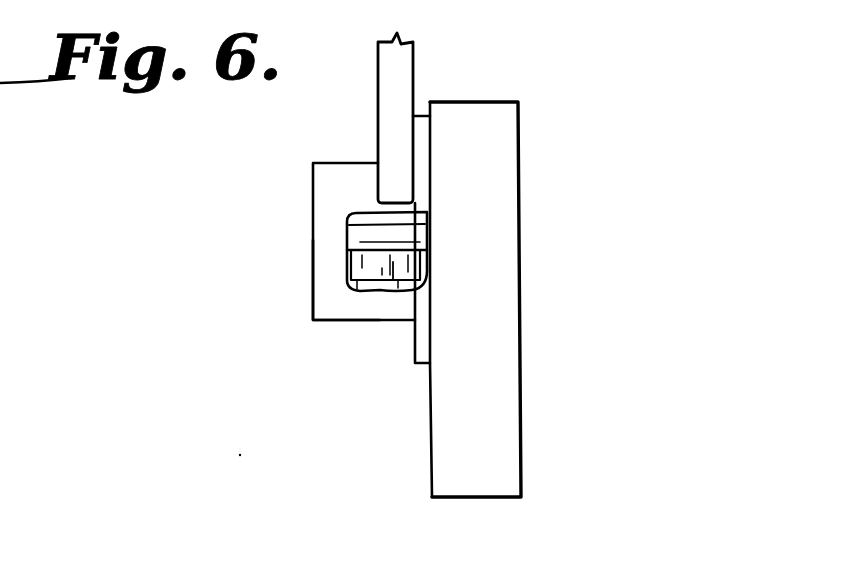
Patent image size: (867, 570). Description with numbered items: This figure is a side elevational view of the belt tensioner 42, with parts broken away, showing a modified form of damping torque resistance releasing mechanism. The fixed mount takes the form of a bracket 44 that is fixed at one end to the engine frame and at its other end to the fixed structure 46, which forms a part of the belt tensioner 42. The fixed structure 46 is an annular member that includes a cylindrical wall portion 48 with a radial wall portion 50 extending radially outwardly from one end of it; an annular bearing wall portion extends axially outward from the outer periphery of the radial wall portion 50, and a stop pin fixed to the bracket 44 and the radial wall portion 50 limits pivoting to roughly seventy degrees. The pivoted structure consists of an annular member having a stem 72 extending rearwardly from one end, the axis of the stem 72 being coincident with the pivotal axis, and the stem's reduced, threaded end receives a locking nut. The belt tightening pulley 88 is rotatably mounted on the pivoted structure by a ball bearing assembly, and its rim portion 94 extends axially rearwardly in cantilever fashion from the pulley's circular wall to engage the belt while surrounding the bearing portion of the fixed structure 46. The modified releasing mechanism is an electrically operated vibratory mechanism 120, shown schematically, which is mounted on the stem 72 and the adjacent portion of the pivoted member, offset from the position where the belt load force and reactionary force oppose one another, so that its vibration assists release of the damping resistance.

The belt tensioner 42 is at (494, 91).
The bracket 44 is at (388, 87).
The fixed structure 46 is at (312, 185).
The cylindrical wall portion 48 is at (330, 265).
The radial wall portion 50 is at (422, 162).
The stem 72 is at (363, 230).
The belt tightening pulley 88 is at (522, 155).
The rim portion 94 is at (503, 257).
The vibratory mechanism 120 is at (395, 276).